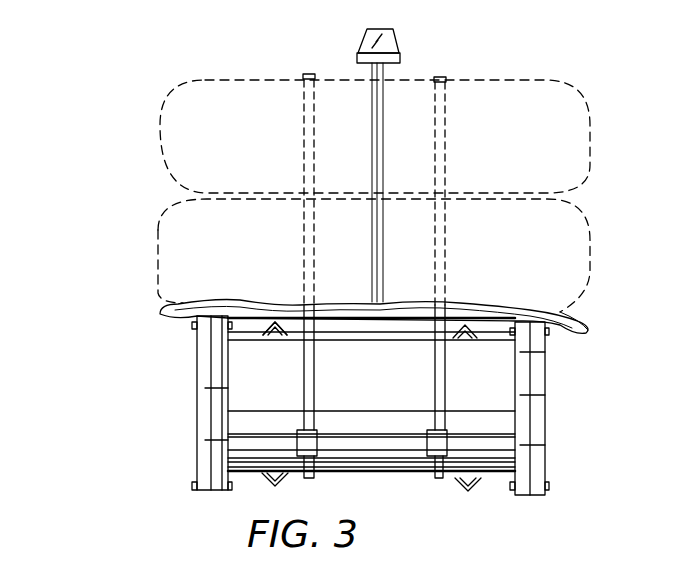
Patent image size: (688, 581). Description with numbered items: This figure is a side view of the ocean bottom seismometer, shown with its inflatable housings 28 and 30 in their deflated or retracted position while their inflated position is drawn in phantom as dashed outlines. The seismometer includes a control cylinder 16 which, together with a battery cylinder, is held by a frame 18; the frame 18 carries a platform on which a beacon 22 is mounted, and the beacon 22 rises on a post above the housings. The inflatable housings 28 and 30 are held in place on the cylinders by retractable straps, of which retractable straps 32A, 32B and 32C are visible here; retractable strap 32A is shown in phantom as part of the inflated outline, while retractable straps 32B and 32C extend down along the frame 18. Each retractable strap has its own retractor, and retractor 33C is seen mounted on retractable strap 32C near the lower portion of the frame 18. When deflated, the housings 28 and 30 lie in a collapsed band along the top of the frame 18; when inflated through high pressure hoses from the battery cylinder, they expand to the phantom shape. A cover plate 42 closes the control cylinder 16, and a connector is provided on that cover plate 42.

The control cylinder 16 is at (384, 458).
The frame 18 is at (272, 328).
The beacon 22 is at (396, 45).
The inflatable housing 28 is at (585, 278).
The inflatable housing 30 is at (575, 134).
The retractable strap 32A is at (590, 208).
The retractable strap 32B is at (443, 380).
The retractable strap 32C is at (314, 386).
The retractor 33C is at (318, 452).
The cover plate 42 is at (195, 494).